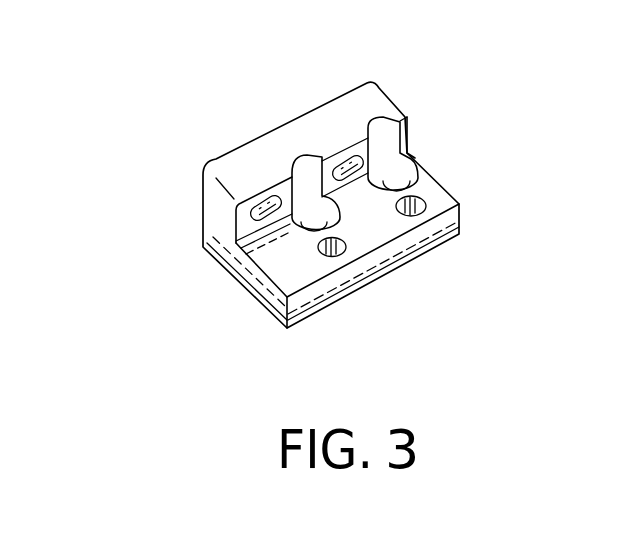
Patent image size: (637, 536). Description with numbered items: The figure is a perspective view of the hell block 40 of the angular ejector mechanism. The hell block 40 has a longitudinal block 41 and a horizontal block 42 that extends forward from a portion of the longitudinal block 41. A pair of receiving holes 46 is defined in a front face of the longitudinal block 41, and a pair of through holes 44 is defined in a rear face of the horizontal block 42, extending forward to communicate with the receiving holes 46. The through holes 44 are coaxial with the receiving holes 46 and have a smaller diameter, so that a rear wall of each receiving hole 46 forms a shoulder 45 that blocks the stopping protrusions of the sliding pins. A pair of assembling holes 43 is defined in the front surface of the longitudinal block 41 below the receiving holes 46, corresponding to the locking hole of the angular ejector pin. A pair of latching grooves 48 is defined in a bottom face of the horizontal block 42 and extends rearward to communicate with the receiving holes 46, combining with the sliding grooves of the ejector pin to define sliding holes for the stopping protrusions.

The hell block 40 is at (153, 250).
The longitudinal block 41 is at (278, 270).
The horizontal block 42 is at (248, 167).
The assembling holes 43 is at (343, 254).
The through holes 44 is at (403, 167).
The shoulder 45 is at (385, 155).
The receiving holes 46 is at (410, 162).
The latching grooves 48 is at (390, 147).